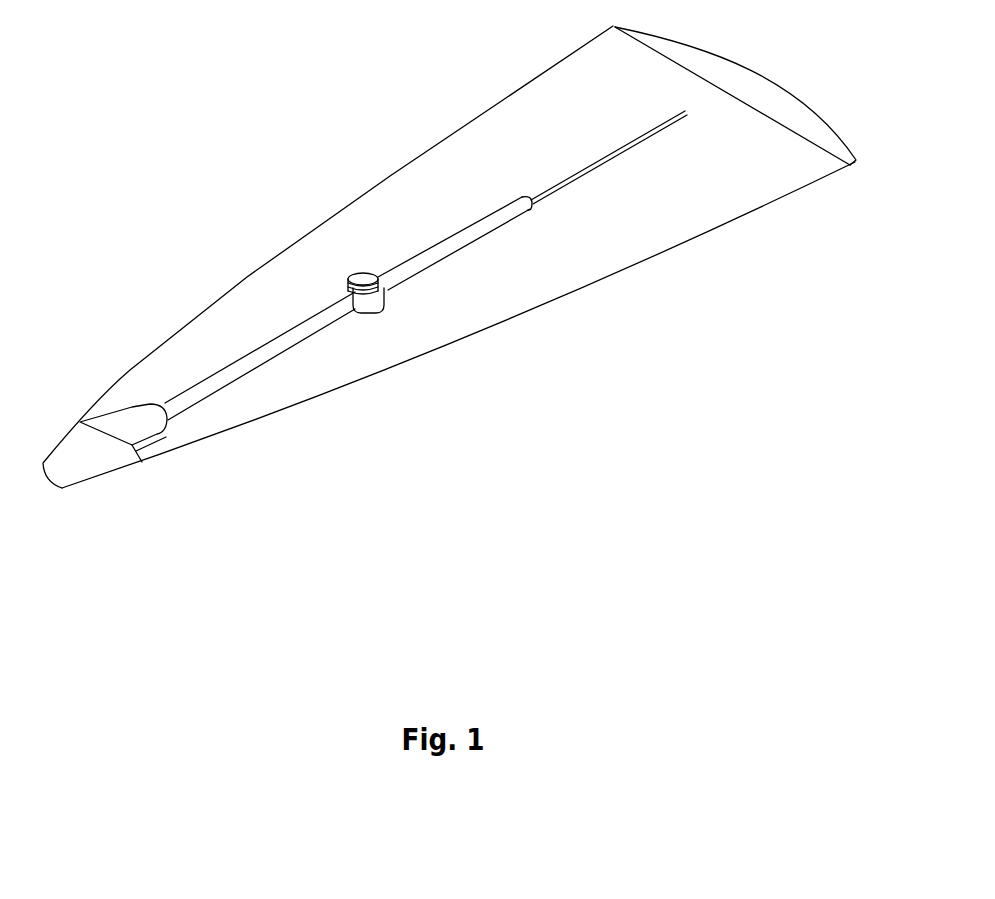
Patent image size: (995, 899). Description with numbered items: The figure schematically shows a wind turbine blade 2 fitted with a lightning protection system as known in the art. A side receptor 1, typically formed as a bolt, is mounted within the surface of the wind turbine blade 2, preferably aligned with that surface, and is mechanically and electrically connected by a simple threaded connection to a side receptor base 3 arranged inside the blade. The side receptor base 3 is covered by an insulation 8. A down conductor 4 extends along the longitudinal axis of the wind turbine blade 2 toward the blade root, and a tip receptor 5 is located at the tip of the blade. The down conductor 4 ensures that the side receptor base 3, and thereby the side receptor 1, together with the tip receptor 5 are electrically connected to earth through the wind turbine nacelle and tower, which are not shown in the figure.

The side receptor 1 is at (371, 274).
The wind turbine blade 2 is at (167, 363).
The side receptor base 3 is at (380, 283).
The down conductor 4 is at (653, 130).
The tip receptor 5 is at (82, 428).
The insulation 8 is at (380, 310).